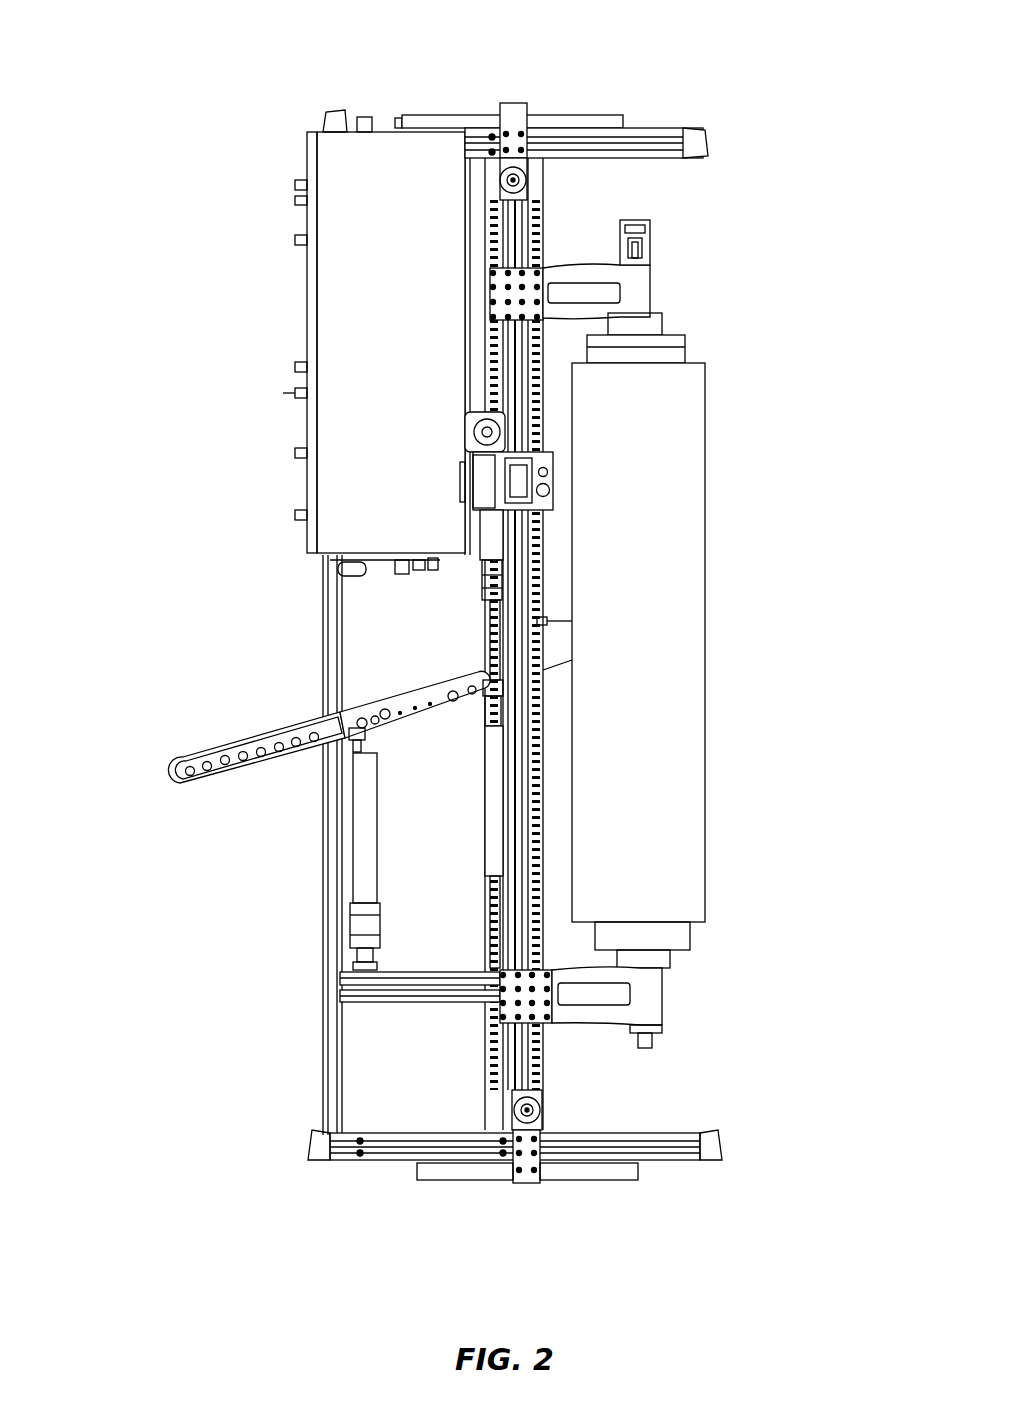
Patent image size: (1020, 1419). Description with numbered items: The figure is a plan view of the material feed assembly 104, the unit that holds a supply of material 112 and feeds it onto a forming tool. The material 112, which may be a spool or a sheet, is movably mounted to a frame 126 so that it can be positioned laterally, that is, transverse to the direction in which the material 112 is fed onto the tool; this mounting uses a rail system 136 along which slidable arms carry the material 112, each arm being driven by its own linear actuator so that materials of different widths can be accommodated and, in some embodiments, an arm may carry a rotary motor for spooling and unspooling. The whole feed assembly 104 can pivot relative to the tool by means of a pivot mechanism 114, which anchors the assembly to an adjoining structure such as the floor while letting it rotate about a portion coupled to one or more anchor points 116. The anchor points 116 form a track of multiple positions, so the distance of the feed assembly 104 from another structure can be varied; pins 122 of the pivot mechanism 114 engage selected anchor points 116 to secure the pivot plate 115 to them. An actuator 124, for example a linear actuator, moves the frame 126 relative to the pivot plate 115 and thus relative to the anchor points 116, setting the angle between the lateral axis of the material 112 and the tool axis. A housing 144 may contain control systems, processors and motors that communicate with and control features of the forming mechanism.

The material feed assembly 104 is at (110, 102).
The supply of material 112 is at (665, 465).
The pivot mechanism 114 is at (423, 708).
The pivot plate 115 is at (400, 712).
The anchor points 116 is at (192, 760).
The pins 122 is at (353, 718).
The actuator 124 is at (363, 863).
The frame 126 is at (618, 138).
The rail system 136 is at (557, 1067).
The control unit 144 is at (380, 272).